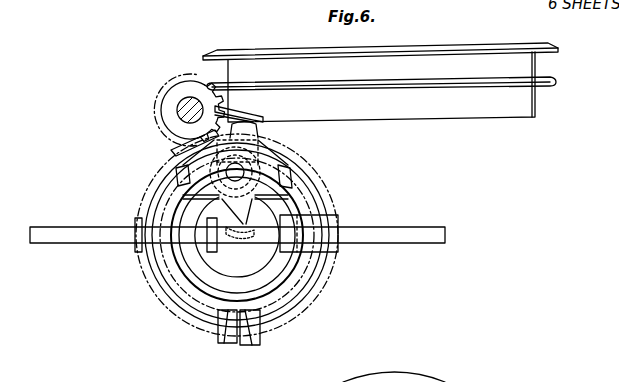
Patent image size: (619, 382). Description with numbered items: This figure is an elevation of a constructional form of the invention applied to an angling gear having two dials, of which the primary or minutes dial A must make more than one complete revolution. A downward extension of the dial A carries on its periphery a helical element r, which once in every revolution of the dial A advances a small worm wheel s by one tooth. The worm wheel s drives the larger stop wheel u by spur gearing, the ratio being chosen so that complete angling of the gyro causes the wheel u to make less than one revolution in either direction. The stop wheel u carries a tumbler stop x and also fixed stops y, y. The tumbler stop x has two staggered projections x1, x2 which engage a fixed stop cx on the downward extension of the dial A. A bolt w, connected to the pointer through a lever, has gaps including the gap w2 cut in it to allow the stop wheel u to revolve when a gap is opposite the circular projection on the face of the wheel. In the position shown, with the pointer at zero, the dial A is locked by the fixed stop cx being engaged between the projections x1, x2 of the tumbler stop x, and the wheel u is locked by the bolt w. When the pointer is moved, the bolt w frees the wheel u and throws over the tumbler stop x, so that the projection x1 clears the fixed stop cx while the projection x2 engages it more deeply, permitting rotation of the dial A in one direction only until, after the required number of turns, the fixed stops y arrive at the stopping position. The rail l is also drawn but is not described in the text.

The primary or minutes dial A is at (388, 47).
The lower rail l is at (430, 83).
The worm wheel s is at (170, 82).
The helical element r is at (235, 118).
The fixed stop cx is at (262, 118).
The projection x1 is at (270, 122).
The projection x2 is at (210, 137).
The tumbler stop x is at (286, 178).
The stop wheel u is at (313, 177).
The gap w2 is at (297, 273).
The bolt w is at (88, 229).
The fixed stops y is at (250, 342).